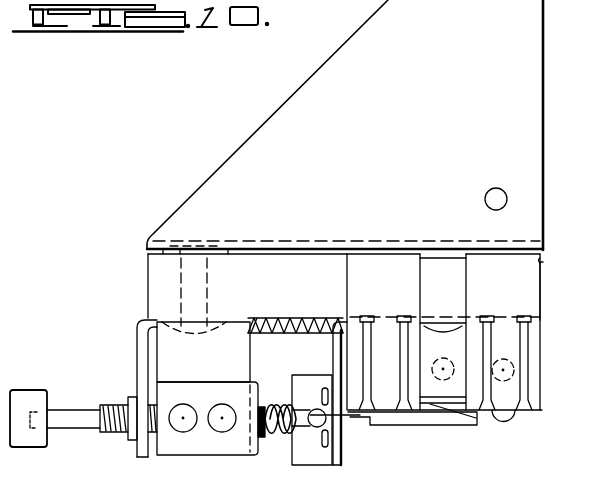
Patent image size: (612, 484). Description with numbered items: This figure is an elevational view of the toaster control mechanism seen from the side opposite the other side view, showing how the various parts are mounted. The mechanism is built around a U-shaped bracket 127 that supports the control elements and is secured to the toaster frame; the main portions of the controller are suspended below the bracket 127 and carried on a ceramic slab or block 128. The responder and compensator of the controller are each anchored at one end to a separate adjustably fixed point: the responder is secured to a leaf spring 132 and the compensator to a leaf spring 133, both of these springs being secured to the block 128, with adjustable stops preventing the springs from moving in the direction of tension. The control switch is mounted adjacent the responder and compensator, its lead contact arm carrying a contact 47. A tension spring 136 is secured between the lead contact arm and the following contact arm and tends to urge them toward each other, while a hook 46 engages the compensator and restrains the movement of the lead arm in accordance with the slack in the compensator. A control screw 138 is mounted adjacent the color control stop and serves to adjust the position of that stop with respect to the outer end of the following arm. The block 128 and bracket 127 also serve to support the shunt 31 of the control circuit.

The U-shaped bracket 127 is at (524, 153).
The ceramic block 128 is at (545, 278).
The leaf spring 132 is at (533, 357).
The leaf spring 133 is at (390, 397).
The shunt 31 is at (275, 318).
The contact 47 is at (276, 400).
The hook 46 is at (357, 422).
The tension spring 136 is at (276, 400).
The control screw 138 is at (117, 436).